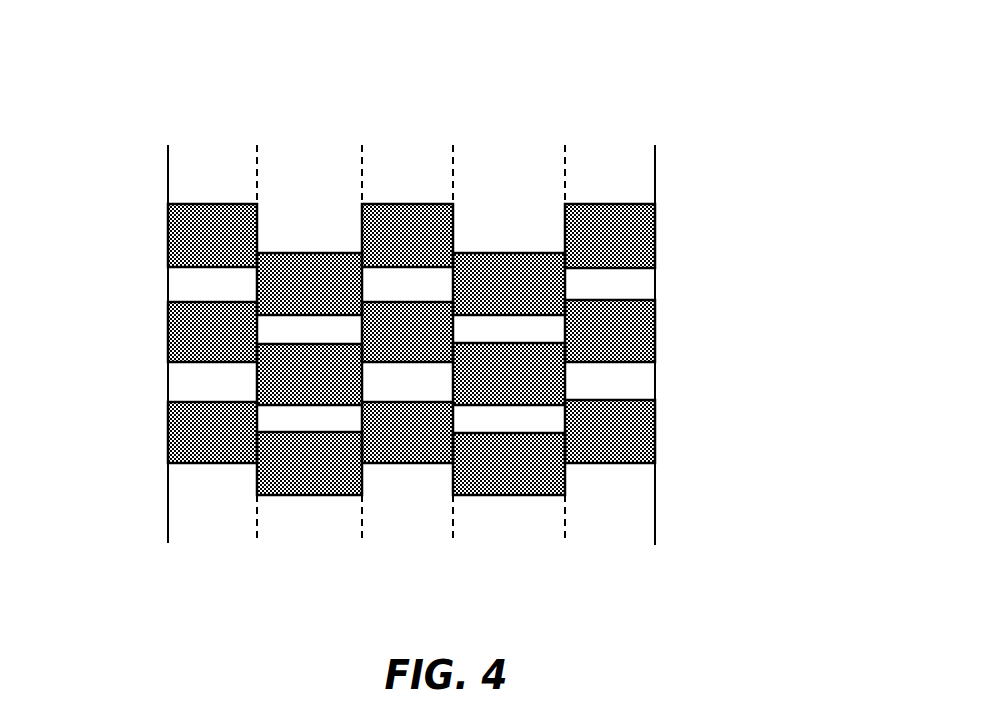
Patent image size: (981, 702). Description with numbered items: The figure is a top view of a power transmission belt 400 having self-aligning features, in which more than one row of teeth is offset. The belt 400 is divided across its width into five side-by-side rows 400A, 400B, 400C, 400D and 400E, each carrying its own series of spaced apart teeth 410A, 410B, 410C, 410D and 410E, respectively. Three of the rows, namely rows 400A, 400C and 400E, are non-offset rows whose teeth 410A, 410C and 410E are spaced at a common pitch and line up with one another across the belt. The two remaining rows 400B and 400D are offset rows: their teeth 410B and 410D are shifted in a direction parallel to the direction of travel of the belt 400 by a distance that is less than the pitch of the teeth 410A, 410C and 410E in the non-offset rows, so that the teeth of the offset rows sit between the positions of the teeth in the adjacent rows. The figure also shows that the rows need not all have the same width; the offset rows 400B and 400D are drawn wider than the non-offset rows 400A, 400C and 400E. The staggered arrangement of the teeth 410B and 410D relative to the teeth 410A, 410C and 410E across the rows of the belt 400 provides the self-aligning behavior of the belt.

The belt 400 is at (475, 324).
The row 400A is at (168, 143).
The row 400B is at (257, 540).
The row 400C is at (453, 143).
The row 400D is at (453, 540).
The row 400E is at (655, 143).
The spaced apart teeth 410A is at (205, 233).
The spaced apart teeth 410B is at (322, 277).
The spaced apart teeth 410C is at (455, 212).
The spaced apart teeth 410D is at (530, 465).
The spaced apart teeth 410E is at (625, 327).